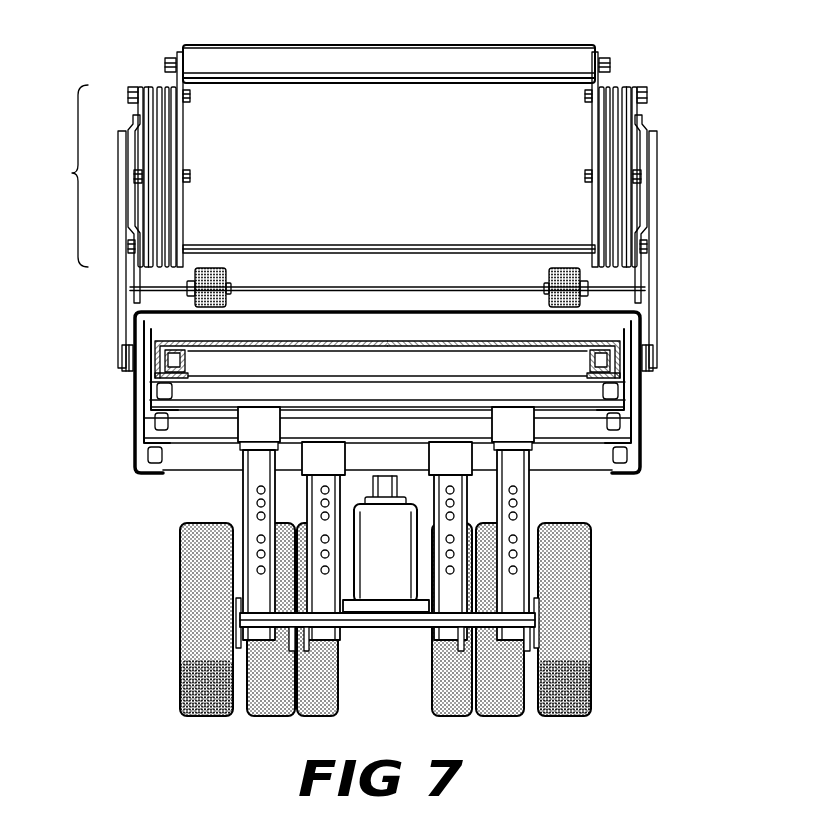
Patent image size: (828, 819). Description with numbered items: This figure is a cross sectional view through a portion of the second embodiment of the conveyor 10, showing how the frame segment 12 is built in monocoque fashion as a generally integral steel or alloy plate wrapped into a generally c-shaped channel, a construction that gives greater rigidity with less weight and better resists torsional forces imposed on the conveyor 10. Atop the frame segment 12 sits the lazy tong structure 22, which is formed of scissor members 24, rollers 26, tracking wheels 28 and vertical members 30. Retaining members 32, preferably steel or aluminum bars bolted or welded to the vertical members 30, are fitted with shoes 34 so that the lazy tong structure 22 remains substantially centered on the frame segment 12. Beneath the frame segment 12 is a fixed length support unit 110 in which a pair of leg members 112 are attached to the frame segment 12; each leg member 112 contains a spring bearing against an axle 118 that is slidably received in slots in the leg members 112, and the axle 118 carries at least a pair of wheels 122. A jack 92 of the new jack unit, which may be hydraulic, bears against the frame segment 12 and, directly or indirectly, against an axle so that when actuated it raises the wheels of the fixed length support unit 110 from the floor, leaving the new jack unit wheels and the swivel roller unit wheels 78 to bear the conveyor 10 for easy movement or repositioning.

The conveyor 10 is at (148, 42).
The frame segment 12 is at (433, 310).
The lazy tong structure 22 is at (62, 176).
The scissor member 24 is at (193, 158).
The roller 26 is at (433, 52).
The tracking wheel 28 is at (212, 270).
The vertical member 30 is at (130, 118).
The retaining member 32 is at (124, 330).
The shoe 34 is at (127, 380).
The wheel 78 is at (440, 717).
The jack 92 is at (396, 576).
The fixed length support unit 110 is at (196, 722).
The leg member 112 is at (320, 522).
The axle 118 is at (363, 628).
The wheel 122 is at (188, 672).